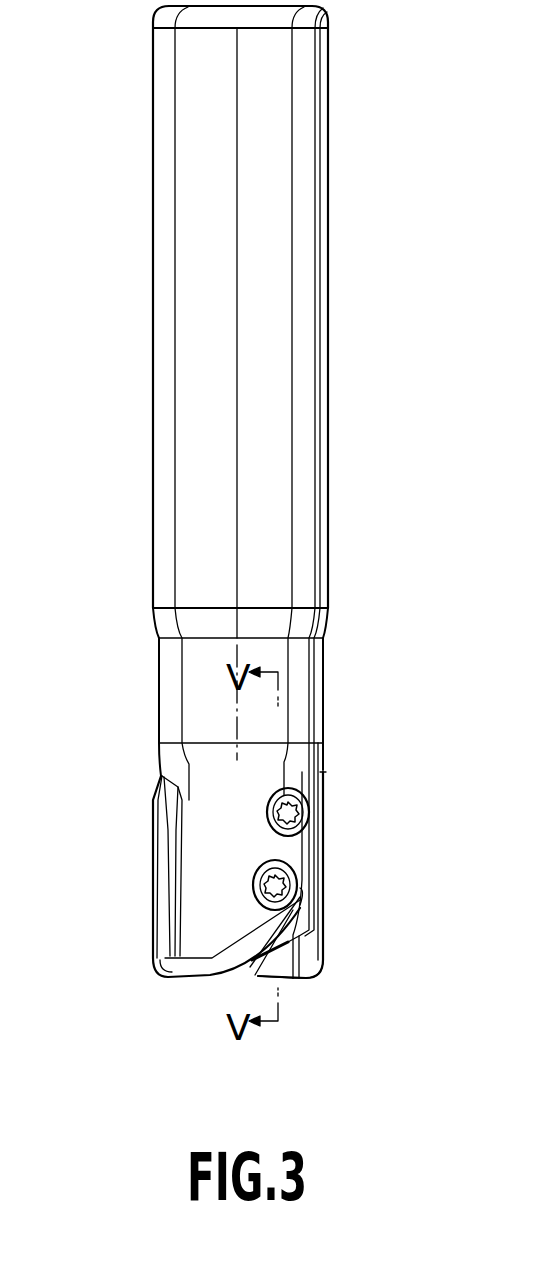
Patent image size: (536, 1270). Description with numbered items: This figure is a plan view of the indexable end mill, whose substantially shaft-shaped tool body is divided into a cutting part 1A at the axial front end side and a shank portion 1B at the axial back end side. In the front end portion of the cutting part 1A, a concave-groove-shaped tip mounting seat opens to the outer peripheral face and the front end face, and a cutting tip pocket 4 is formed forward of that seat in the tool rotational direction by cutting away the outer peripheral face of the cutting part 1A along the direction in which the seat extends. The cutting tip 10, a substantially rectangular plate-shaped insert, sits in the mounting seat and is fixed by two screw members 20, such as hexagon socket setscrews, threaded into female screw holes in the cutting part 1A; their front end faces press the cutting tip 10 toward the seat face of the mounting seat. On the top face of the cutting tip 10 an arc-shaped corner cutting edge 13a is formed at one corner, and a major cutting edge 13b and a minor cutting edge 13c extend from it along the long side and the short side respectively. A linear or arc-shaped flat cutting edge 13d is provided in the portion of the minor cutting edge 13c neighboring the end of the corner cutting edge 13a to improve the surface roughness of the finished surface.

The cutting part 1A is at (140, 860).
The shank portion 1B is at (139, 438).
The cutting tip 10 is at (338, 863).
The corner cutting edge 13a is at (318, 978).
The major cutting edge 13b is at (327, 893).
The minor cutting edge 13c is at (290, 985).
The flat cutting edge 13d is at (305, 983).
The cutting tip pocket 4 is at (300, 888).
The screw member 20 is at (291, 862).